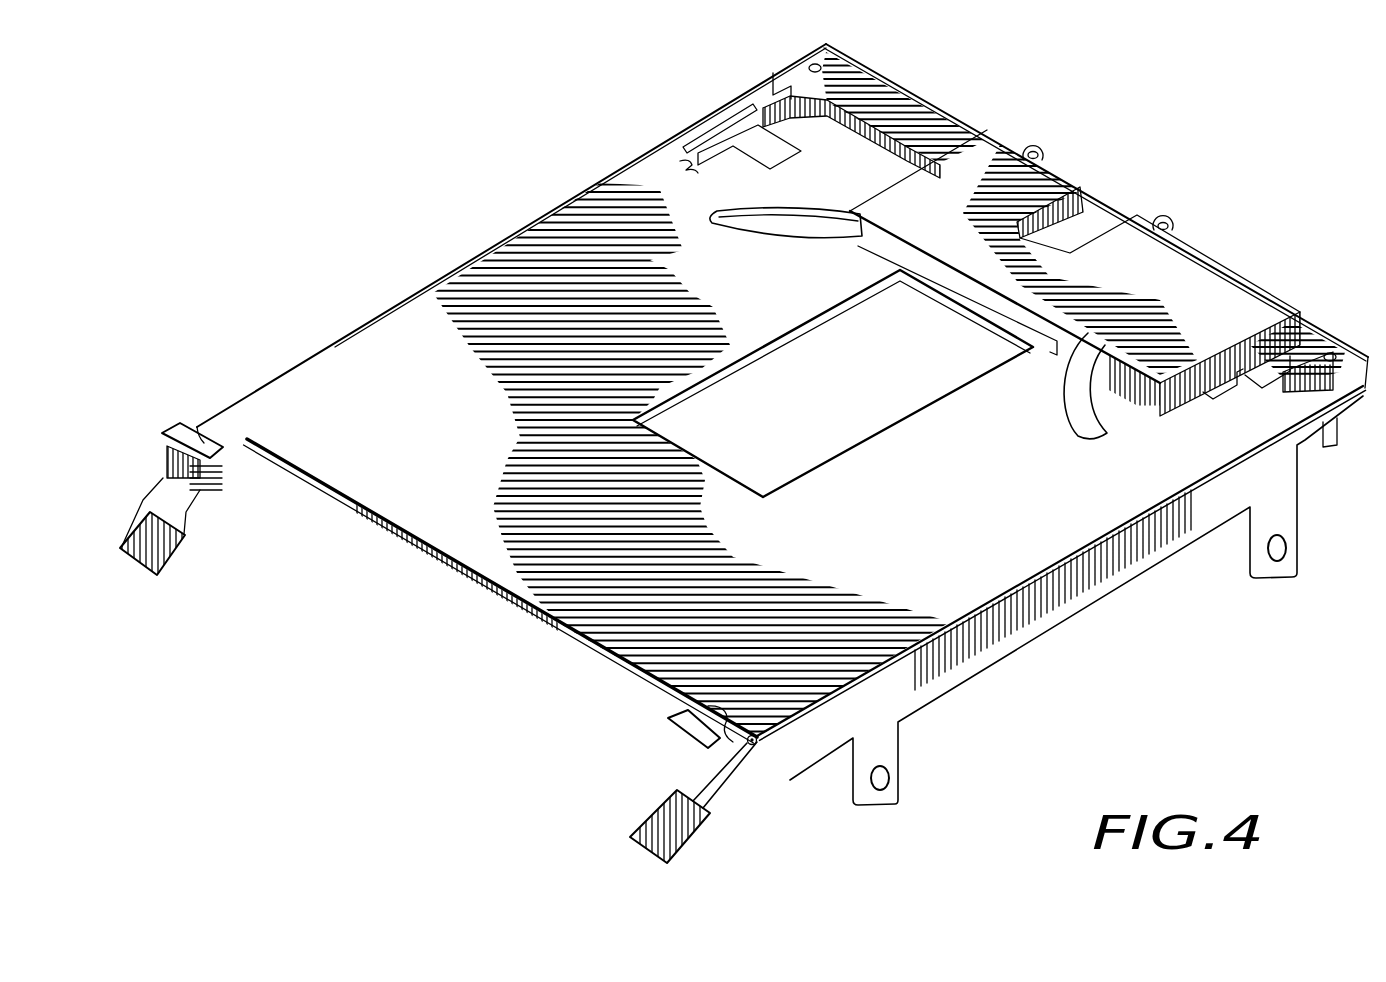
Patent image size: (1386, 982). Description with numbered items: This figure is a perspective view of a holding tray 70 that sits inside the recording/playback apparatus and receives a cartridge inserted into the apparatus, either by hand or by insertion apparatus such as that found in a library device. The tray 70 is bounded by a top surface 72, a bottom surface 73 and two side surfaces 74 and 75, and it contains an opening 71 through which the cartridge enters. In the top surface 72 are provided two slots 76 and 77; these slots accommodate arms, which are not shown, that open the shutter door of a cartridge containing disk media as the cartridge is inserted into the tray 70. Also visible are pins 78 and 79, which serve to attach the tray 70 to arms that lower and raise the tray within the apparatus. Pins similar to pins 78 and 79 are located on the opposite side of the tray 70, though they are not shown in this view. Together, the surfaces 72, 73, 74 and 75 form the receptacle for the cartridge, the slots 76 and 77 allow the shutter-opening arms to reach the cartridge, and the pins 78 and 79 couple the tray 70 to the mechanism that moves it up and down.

The holding tray 70 is at (392, 268).
The opening 71 is at (690, 751).
The top surface 72 is at (584, 222).
The bottom surface 73 is at (240, 470).
The side surface 74 is at (1045, 615).
The side surface 75 is at (484, 256).
The slot 76 is at (818, 233).
The slot 77 is at (1095, 335).
The pin 78 is at (888, 776).
The pin 79 is at (1284, 546).